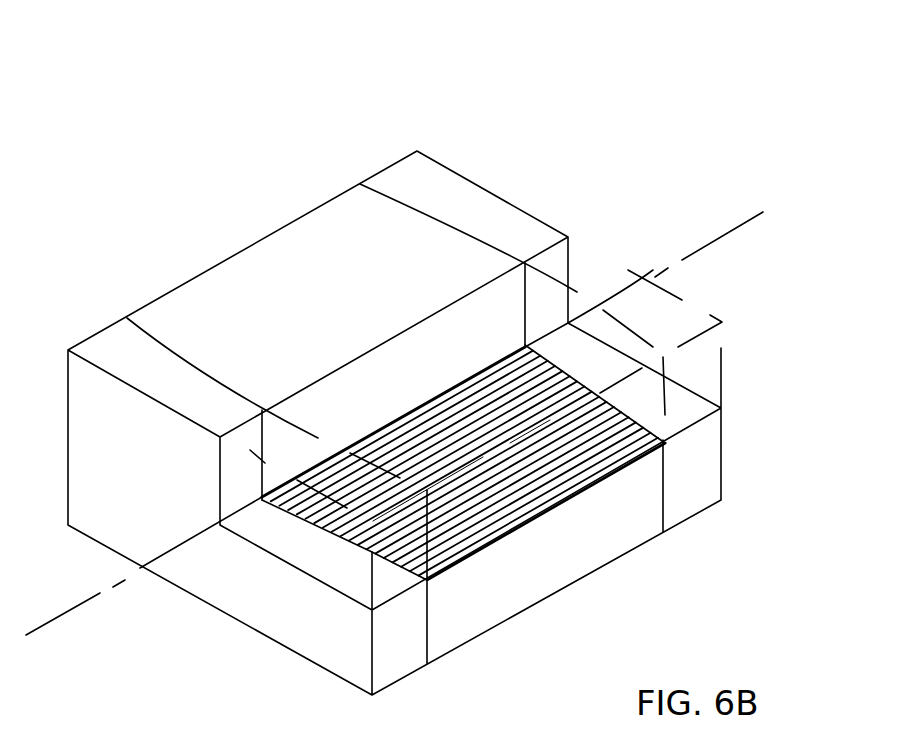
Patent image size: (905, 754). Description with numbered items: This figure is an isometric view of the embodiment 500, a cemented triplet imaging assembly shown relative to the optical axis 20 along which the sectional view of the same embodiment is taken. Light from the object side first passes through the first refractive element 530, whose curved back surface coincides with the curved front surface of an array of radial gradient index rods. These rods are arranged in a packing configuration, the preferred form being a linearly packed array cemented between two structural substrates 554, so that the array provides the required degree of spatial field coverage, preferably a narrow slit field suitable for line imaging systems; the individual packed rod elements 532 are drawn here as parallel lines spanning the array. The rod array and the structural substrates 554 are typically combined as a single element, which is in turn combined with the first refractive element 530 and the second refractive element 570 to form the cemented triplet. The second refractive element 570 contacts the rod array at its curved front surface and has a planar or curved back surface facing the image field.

The embodiment of the invention 500 is at (393, 408).
The first refractive element 530 is at (110, 340).
The structural substrates 554 is at (272, 250).
The second refractive element 570 is at (398, 177).
The ribs 532 is at (478, 543).
The optical axis 20 is at (43, 621).